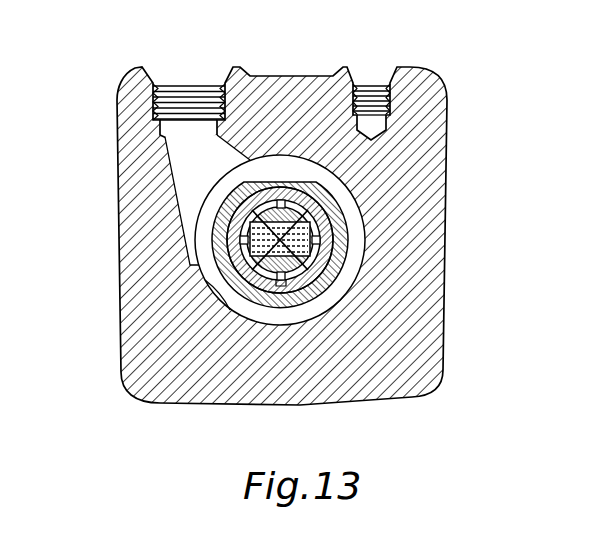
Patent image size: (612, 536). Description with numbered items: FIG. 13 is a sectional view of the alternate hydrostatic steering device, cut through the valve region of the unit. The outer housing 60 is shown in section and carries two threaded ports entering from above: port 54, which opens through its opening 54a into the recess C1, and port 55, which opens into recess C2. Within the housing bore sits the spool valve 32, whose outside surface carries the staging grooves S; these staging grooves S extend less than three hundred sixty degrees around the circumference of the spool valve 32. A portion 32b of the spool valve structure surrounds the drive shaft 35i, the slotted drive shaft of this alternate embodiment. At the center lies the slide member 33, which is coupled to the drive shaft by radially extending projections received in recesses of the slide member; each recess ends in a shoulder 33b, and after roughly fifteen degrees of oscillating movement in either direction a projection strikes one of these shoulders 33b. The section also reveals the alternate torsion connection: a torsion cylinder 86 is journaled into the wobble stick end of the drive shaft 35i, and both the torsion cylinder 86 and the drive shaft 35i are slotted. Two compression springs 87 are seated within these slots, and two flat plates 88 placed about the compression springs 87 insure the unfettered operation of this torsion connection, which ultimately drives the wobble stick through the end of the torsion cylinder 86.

The valve body 60 is at (438, 168).
The port 54 is at (190, 97).
The port opening 54a is at (222, 133).
The port 55 is at (363, 78).
The spool valve 32 is at (262, 322).
The valve body portion 32b is at (283, 178).
The drive shaft 35i is at (310, 194).
The slide member 33 is at (320, 242).
The shoulder 33b is at (308, 214).
The flat plate 88 is at (250, 188).
The compression spring 87 is at (220, 305).
The torsion cylinder 86 is at (282, 290).
The staging groove S is at (263, 176).